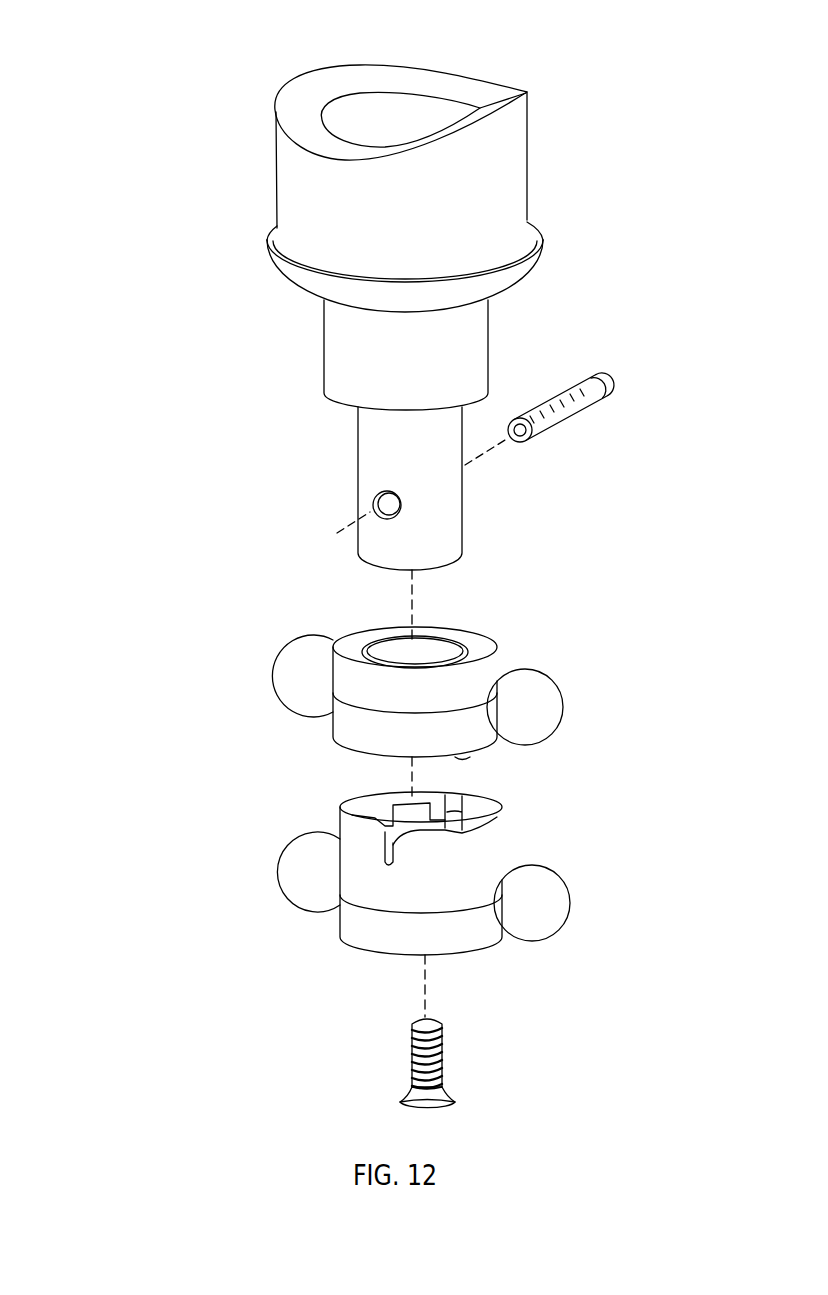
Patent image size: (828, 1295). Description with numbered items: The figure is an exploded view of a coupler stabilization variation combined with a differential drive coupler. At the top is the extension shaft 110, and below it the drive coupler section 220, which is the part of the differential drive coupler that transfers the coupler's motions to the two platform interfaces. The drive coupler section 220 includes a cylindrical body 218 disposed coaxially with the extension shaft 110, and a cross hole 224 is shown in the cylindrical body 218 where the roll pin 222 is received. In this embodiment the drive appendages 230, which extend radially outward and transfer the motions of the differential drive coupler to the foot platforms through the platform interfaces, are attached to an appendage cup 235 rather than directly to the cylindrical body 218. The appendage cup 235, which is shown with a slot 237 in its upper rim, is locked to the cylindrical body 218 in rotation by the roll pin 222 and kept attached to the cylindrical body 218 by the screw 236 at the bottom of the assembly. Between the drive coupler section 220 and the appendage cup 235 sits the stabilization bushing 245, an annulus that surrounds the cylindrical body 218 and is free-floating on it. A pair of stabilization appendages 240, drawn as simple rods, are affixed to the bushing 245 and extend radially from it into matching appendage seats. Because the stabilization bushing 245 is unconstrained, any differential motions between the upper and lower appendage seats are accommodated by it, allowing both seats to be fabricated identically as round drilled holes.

The extension shaft 110 is at (280, 77).
The drive coupler section 220 is at (270, 266).
The cylindrical body 218 is at (358, 440).
The cross hole 224 is at (376, 498).
The roll pin 222 is at (577, 410).
The stabilization bushing 245 is at (493, 633).
The stabilization appendages 240 is at (270, 689).
The appendage cup 235 is at (352, 937).
The slot 237 is at (387, 852).
The drive appendages 230 is at (277, 884).
The screw 236 is at (411, 1038).